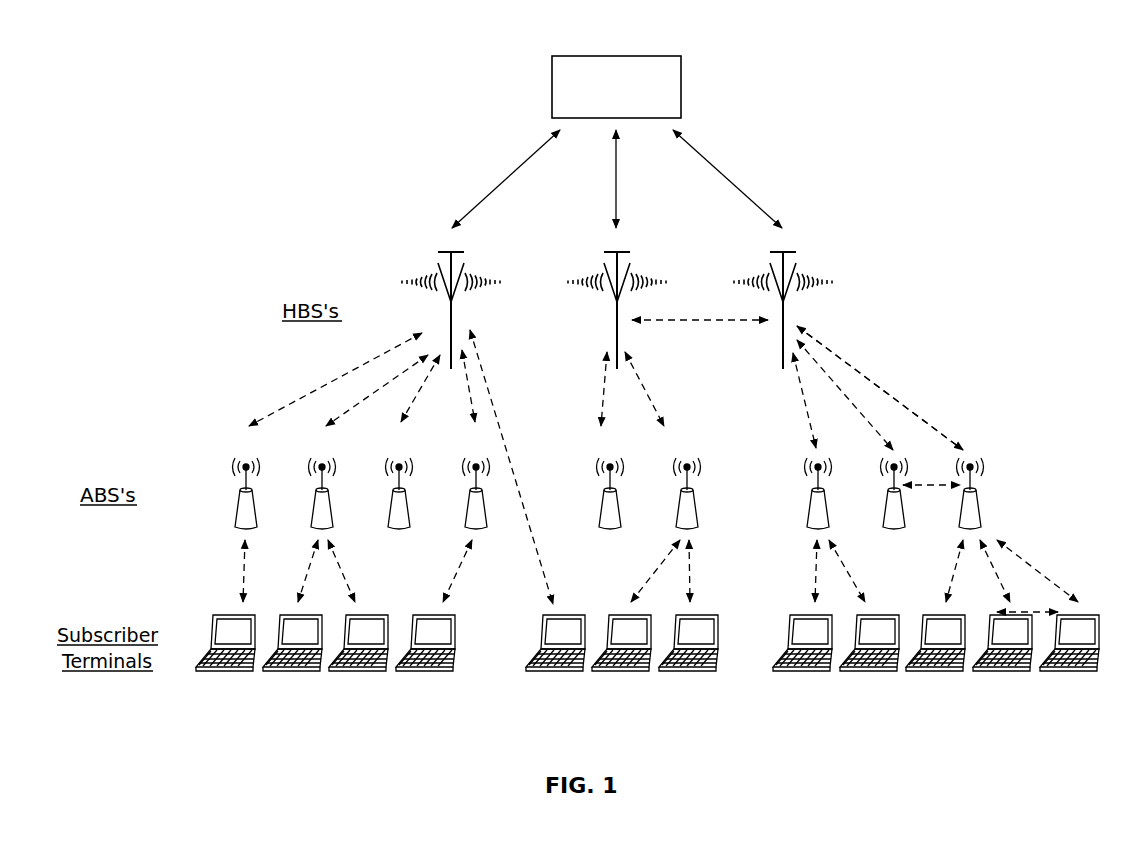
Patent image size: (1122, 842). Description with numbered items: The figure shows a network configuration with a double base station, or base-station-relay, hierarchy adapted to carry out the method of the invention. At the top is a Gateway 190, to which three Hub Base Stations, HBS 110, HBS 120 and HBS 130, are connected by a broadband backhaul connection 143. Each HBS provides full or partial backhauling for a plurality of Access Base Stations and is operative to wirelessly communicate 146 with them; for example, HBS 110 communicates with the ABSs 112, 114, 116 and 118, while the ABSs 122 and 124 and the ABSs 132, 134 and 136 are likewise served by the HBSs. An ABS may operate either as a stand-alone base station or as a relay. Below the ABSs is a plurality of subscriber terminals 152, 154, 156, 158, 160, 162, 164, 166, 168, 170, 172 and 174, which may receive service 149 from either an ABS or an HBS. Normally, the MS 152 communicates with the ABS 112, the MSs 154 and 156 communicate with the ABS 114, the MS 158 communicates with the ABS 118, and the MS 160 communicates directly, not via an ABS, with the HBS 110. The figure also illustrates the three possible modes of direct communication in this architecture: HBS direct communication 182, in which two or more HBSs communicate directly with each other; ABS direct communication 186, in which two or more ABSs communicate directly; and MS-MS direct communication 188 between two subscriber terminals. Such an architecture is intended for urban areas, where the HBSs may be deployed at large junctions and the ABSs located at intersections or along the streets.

The Gateway 190 is at (607, 55).
The broadband backhaul connection 143 is at (730, 176).
The HBS 110 is at (434, 257).
The HBS 120 is at (600, 257).
The HBS 130 is at (765, 257).
The HBS-HBS direct communication 182 is at (688, 322).
The wireless communication between HBS and ABSs 146 is at (889, 376).
The ABS-ABS direct communication 186 is at (925, 487).
The service to MS 149 is at (1017, 553).
The MS-MS direct communication 188 is at (1033, 611).
The ABS 112 is at (242, 459).
The ABS 114 is at (318, 459).
The ABS 116 is at (395, 459).
The ABS 118 is at (472, 459).
The ABS 122 is at (606, 459).
The ABS 124 is at (683, 459).
The ABS 132 is at (814, 459).
The ABS 134 is at (890, 459).
The ABS 136 is at (966, 459).
The subscriber terminal 152 is at (234, 680).
The subscriber terminal 154 is at (300, 680).
The subscriber terminal 156 is at (366, 680).
The subscriber terminal 158 is at (433, 680).
The subscriber terminal 160 is at (554, 680).
The subscriber terminal 162 is at (620, 680).
The subscriber terminal 164 is at (687, 680).
The subscriber terminal 166 is at (811, 678).
The subscriber terminal 168 is at (878, 678).
The subscriber terminal 170 is at (945, 678).
The subscriber terminal 172 is at (1011, 678).
The subscriber terminal 174 is at (1078, 678).